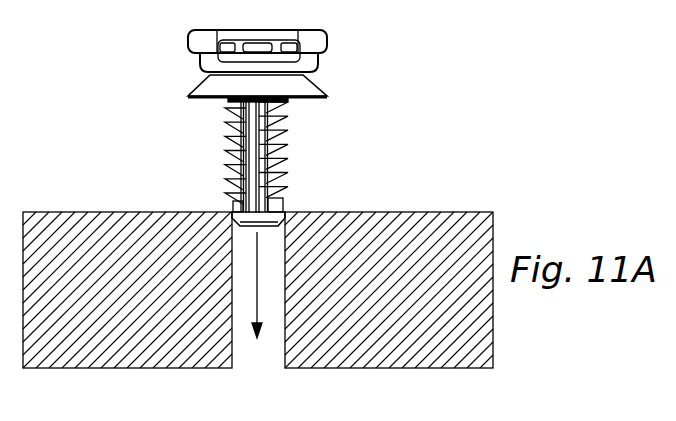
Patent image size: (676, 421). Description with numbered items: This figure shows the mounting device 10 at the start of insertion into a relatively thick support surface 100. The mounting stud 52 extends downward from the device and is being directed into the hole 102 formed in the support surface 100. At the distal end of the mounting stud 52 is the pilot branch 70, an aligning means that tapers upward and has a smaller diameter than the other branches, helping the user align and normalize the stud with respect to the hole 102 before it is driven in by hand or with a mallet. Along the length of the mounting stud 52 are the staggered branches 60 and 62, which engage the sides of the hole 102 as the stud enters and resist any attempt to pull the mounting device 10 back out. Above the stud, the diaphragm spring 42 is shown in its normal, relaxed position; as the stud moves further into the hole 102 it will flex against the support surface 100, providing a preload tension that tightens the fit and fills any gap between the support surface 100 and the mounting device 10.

The mounting device 10 is at (92, 141).
The diaphragm spring 42 is at (212, 83).
The mounting stud 52 is at (228, 170).
The branches 60 is at (227, 112).
The branches 62 is at (287, 163).
The pilot branch 70 is at (298, 210).
The support surface 100 is at (433, 212).
The hole 102 is at (248, 355).